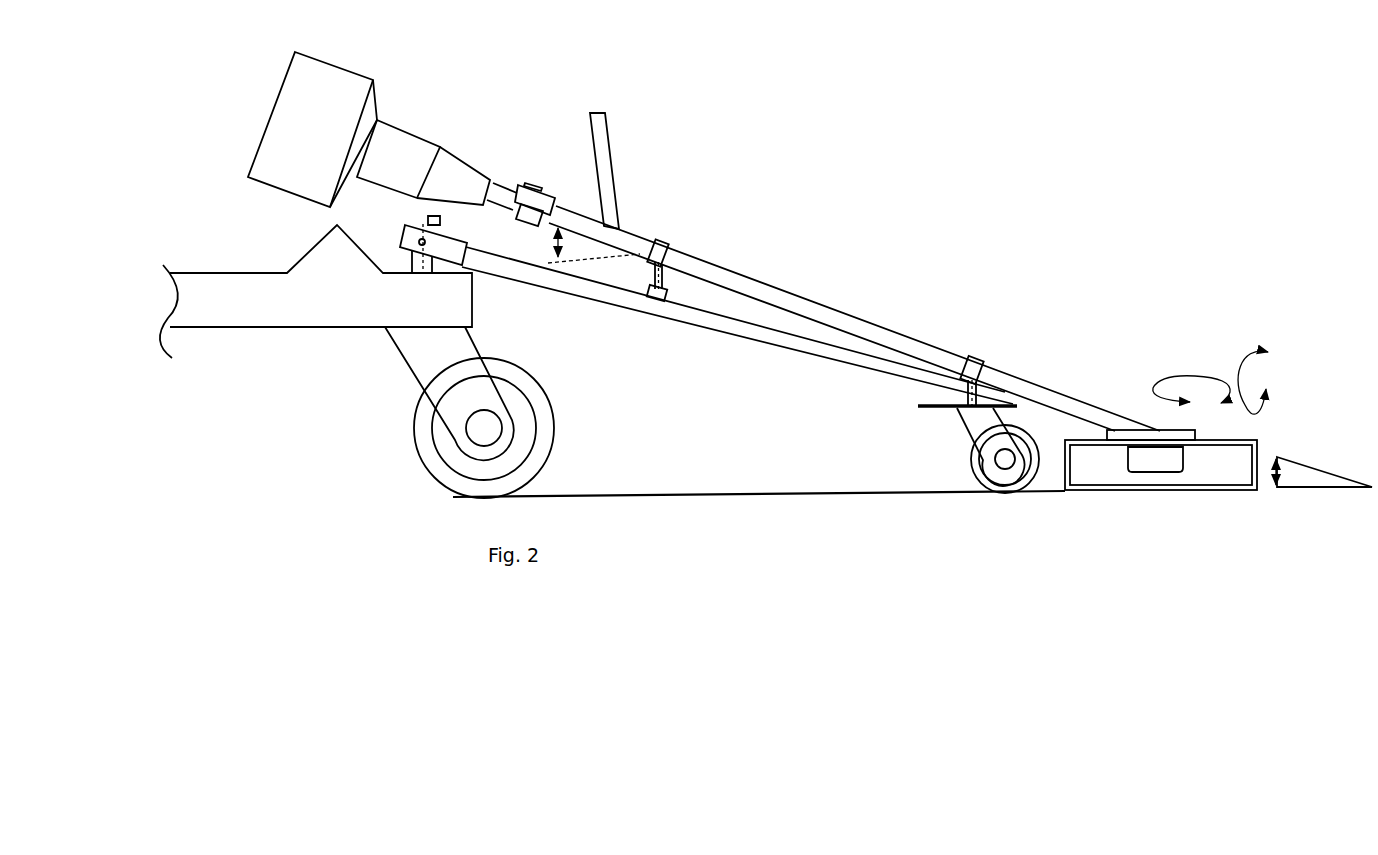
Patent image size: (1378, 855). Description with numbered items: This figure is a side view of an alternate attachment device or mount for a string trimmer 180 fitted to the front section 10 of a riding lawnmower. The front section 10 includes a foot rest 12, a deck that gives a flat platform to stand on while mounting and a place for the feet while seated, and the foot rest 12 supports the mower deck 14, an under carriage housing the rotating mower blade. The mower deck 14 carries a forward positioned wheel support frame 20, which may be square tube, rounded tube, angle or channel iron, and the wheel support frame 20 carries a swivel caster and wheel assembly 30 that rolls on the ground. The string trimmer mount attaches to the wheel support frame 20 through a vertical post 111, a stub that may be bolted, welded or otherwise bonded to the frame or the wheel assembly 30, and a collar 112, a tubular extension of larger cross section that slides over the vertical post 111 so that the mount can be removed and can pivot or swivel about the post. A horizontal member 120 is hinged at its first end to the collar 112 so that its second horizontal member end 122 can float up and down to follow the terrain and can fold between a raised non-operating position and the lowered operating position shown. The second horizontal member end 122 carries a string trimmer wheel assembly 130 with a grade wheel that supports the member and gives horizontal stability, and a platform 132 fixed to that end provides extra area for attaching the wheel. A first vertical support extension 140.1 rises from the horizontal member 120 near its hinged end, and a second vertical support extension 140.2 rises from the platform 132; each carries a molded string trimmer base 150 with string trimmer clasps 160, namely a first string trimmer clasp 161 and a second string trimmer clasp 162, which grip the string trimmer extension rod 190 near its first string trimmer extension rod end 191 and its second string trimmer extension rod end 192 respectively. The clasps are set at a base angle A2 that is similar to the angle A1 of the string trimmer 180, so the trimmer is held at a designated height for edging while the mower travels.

The front section 10 is at (230, 228).
The foot rest 12 is at (222, 307).
The mower deck 14 is at (472, 289).
The wheel support frame 20 is at (362, 311).
The swivel caster and wheel assembly 30 is at (405, 444).
The vertical post 111 is at (405, 257).
The collar 112 is at (440, 218).
The horizontal member 120 is at (697, 326).
The second horizontal member end 122 is at (914, 386).
The string trimmer wheel assembly 130 is at (957, 463).
The platform 132 is at (930, 411).
The first vertical support extension 140.1 is at (690, 262).
The second vertical support extension 140.2 is at (1060, 354).
The string trimmer base 150 is at (749, 246).
The string trimmer clasps 160 is at (749, 246).
The first string trimmer clasp 161 is at (664, 245).
The second string trimmer clasp 162 is at (973, 358).
The string trimmer 180 is at (340, 83).
The string trimmer extension rod 190 is at (747, 283).
The first string trimmer extension rod end 191 is at (634, 196).
The second string trimmer extension rod end 192 is at (1112, 387).
The angle of string trimmer A1 is at (1305, 468).
The base angle A2 is at (556, 243).